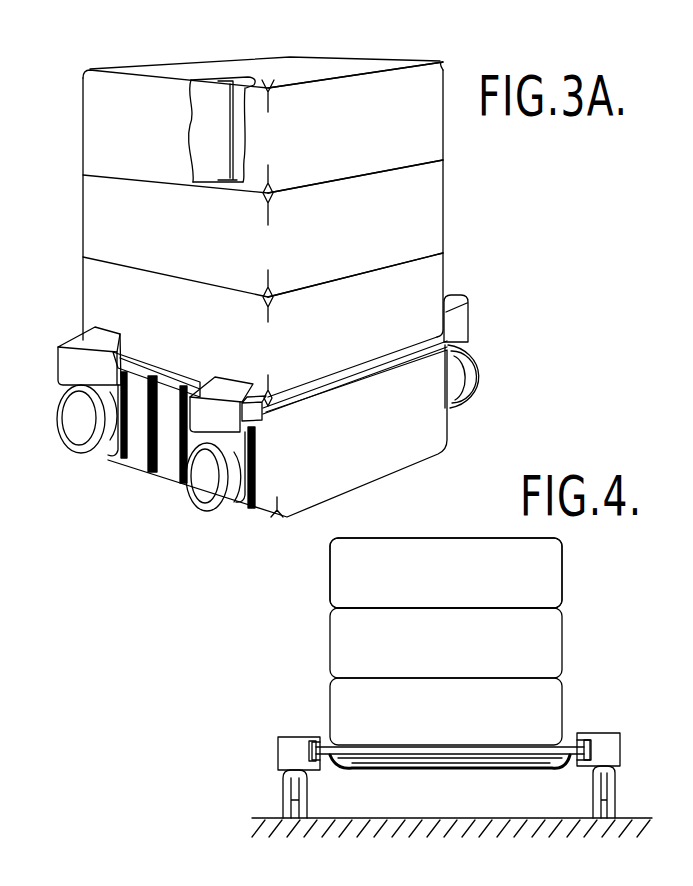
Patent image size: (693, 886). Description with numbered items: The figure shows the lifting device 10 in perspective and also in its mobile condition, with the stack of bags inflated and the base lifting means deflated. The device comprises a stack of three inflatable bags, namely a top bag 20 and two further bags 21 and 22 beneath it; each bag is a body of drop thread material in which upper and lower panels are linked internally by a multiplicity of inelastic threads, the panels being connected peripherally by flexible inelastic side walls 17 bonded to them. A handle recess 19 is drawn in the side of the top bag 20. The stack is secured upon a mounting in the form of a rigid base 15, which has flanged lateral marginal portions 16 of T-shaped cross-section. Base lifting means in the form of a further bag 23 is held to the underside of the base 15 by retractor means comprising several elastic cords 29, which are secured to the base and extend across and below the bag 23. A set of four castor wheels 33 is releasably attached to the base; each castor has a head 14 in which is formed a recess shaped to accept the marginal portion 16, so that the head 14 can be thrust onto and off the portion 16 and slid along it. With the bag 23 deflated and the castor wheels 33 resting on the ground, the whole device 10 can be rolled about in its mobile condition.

In FIG. 3A, the lifting device 10 is at (314, 48).
In FIG. 4, the lifting device 10 is at (458, 527).
In FIG. 3A, the head 14 is at (78, 340).
In FIG. 4, the head 14 is at (287, 745).
In FIG. 3A, the rigid base 15 is at (390, 362).
In FIG. 4, the rigid base 15 is at (360, 747).
In FIG. 3A, the flanged lateral marginal portion 16 is at (138, 368).
In FIG. 3A, the side wall 17 is at (176, 150).
In FIG. 3A, the handle recess 19 is at (229, 136).
In FIG. 3A, the top bag 20 is at (364, 145).
In FIG. 4, the top bag 20 is at (459, 596).
In FIG. 3A, the bag 21 is at (364, 246).
In FIG. 4, the bag 21 is at (462, 655).
In FIG. 3A, the bag 22 is at (362, 340).
In FIG. 4, the bag 22 is at (467, 729).
In FIG. 3A, the base lifting bag 23 is at (368, 430).
In FIG. 4, the base lifting bag 23 is at (440, 775).
In FIG. 3A, the elastic cord 29 is at (175, 469).
In FIG. 4, the elastic cord 29 is at (533, 775).
In FIG. 3A, the castor wheel 33 is at (77, 417).
In FIG. 4, the castor wheel 33 is at (285, 797).